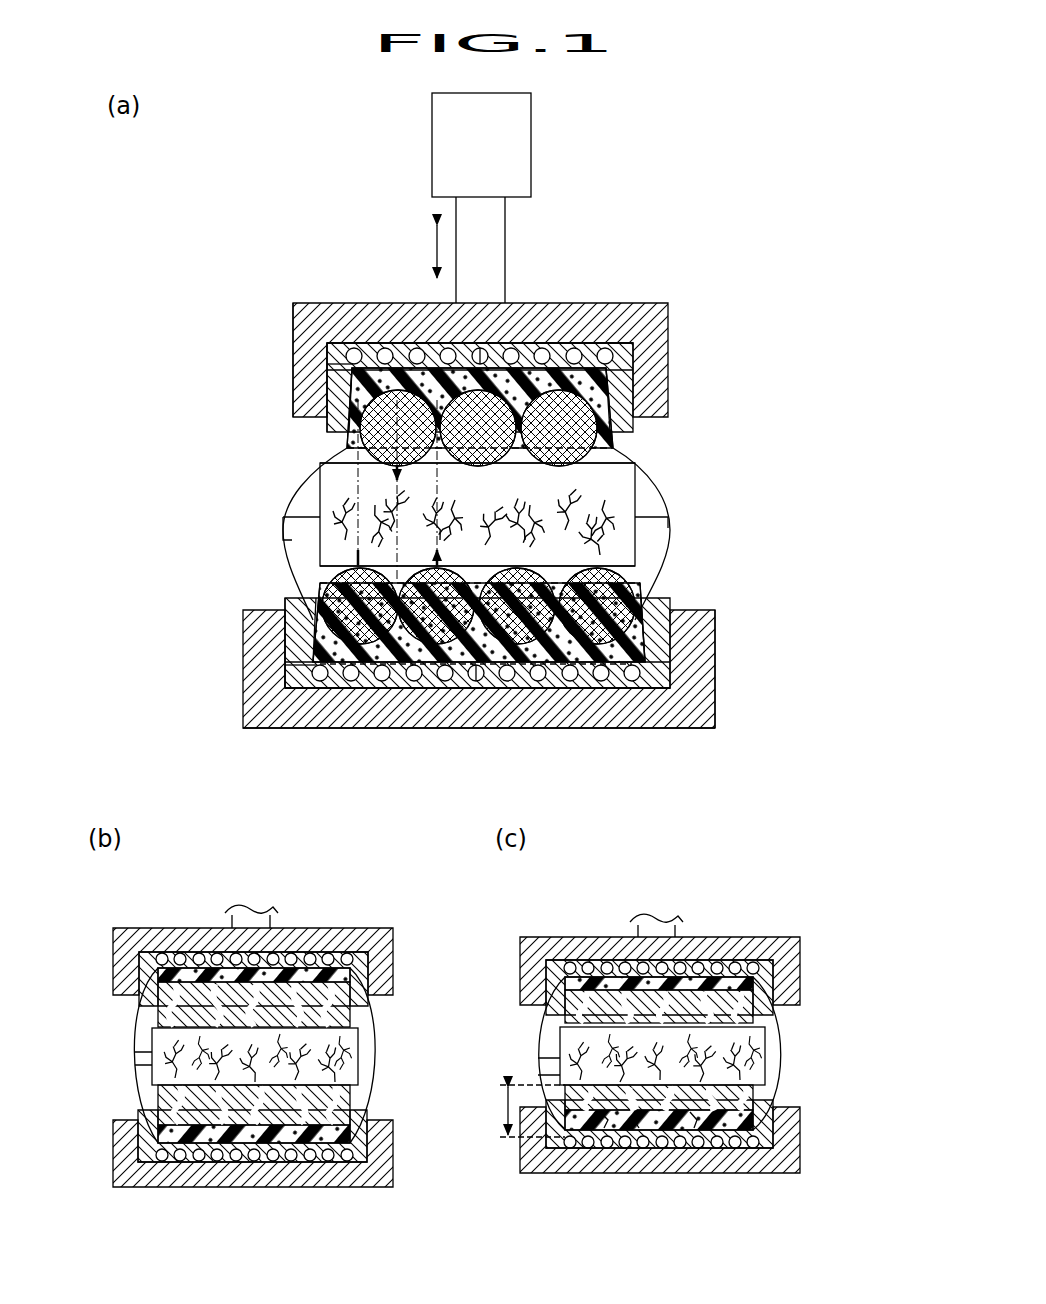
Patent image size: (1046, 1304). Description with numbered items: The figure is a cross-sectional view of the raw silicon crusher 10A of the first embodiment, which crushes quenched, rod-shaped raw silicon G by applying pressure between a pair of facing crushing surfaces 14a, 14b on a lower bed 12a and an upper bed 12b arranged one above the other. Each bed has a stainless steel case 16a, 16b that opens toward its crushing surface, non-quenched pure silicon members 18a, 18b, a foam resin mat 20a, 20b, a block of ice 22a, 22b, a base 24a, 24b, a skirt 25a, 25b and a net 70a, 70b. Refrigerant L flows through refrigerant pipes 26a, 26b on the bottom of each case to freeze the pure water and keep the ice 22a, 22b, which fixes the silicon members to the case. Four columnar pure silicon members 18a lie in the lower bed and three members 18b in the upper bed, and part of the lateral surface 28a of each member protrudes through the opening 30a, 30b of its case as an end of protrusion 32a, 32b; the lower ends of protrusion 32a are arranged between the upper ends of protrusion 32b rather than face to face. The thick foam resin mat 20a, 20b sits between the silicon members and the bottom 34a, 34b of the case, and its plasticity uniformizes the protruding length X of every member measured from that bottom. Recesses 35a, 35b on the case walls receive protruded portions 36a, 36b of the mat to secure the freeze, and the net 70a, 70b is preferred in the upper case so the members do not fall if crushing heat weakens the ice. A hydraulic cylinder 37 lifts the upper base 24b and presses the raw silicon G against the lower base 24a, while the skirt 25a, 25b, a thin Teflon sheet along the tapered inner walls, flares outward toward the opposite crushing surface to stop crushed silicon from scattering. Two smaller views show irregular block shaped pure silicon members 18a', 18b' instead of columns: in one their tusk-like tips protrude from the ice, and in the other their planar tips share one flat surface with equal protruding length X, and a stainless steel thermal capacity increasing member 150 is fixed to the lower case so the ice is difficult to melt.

The raw silicon crusher 10A is at (231, 154).
The lower bed 12a is at (780, 792).
The upper bed 12b is at (780, 259).
The crushing surface 14a is at (705, 560).
The crushing surface 14b is at (662, 466).
The case 16a is at (500, 883).
The case 16b is at (501, 634).
The pure silicon member 18a is at (396, 574).
The pure silicon member 18b is at (406, 477).
The irregular block shaped pure silicon member 18a' is at (513, 1111).
The irregular block shaped pure silicon member 18b' is at (513, 1022).
The foam resin mat 20a is at (535, 662).
The foam resin mat 20b is at (505, 330).
The ice 22a is at (318, 600).
The ice 22b is at (345, 416).
The base 24a is at (705, 695).
The base 24b is at (660, 330).
The skirt 25a is at (305, 535).
The skirt 25b is at (320, 476).
The refrigerant pipe 26a is at (363, 681).
The refrigerant pipe 26b is at (575, 332).
The lateral surface 28a is at (628, 565).
The opening 30a is at (675, 575).
The opening 30b is at (362, 456).
The end of protrusion 32a is at (340, 580).
The end of protrusion 32b is at (605, 460).
The bottom 34a is at (434, 662).
The bottom 34b is at (355, 330).
The recess 35a is at (330, 652).
The recess 35b is at (337, 350).
The protruded portion 36a is at (330, 672).
The protruded portion 36b is at (337, 370).
The hydraulic cylinder 37 is at (527, 148).
The net 70a is at (617, 665).
The net 70b is at (398, 330).
The raw silicon G is at (615, 478).
The refrigerant L is at (325, 690).
The protruding length X is at (505, 1111).
The thermal capacity increasing member 150 is at (637, 1126).